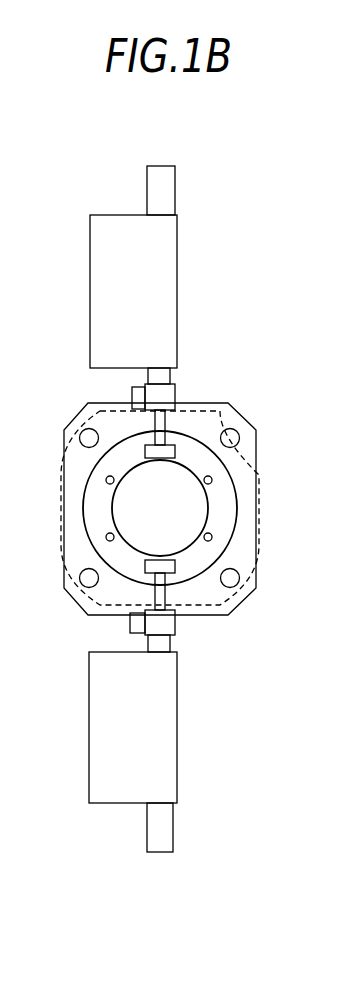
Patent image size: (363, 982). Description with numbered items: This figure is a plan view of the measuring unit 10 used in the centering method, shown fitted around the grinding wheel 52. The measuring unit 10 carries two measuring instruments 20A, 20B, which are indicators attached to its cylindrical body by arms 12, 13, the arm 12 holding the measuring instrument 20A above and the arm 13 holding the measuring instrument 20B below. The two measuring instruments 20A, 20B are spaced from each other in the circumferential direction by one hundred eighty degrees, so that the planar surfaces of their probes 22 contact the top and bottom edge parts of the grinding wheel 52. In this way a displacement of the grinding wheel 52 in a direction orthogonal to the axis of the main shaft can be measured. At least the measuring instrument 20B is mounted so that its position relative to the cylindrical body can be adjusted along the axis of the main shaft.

The measuring unit 10 is at (256, 453).
The arm 12 is at (170, 394).
The arm 13 is at (168, 623).
The measuring instrument 20A is at (178, 288).
The measuring instrument 20B is at (178, 727).
The probe 22 is at (168, 452).
The grinding wheel 52 is at (209, 508).